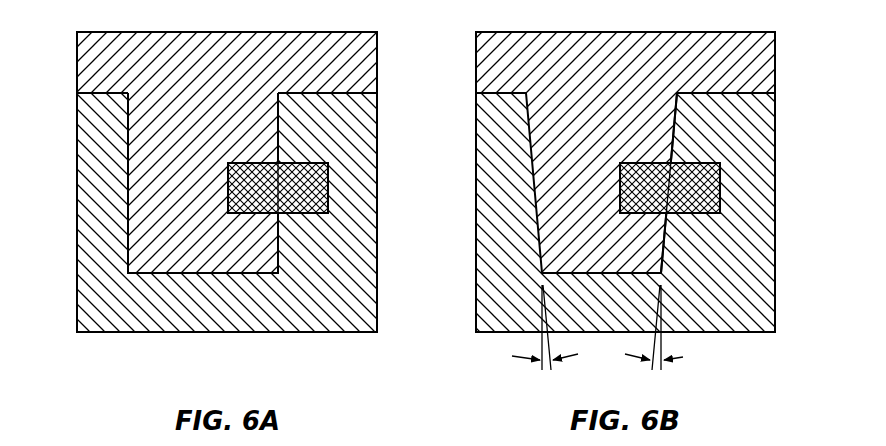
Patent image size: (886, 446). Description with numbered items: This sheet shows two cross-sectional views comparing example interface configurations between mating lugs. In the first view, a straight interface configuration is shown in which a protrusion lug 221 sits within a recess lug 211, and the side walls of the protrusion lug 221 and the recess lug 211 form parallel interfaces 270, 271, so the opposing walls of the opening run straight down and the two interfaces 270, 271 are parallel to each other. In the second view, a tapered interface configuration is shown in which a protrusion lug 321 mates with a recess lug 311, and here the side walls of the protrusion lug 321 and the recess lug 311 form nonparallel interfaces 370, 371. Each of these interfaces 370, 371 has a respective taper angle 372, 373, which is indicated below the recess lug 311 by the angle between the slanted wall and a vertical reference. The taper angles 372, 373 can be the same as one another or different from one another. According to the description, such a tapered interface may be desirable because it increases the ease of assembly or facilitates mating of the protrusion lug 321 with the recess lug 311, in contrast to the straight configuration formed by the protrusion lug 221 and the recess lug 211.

In FIG. 6A, the recess lug 211 is at (100, 197).
In FIG. 6A, the protrusion lug 221 is at (153, 118).
In FIG. 6A, the interface 270 is at (127, 236).
In FIG. 6A, the interface 271 is at (278, 250).
In FIG. 6B, the recess lug 311 is at (503, 147).
In FIG. 6B, the protrusion lug 321 is at (563, 122).
In FIG. 6B, the interface 370 is at (533, 189).
In FIG. 6B, the interface 371 is at (663, 254).
In FIG. 6B, the taper angle 372 is at (512, 356).
In FIG. 6B, the taper angle 373 is at (683, 357).